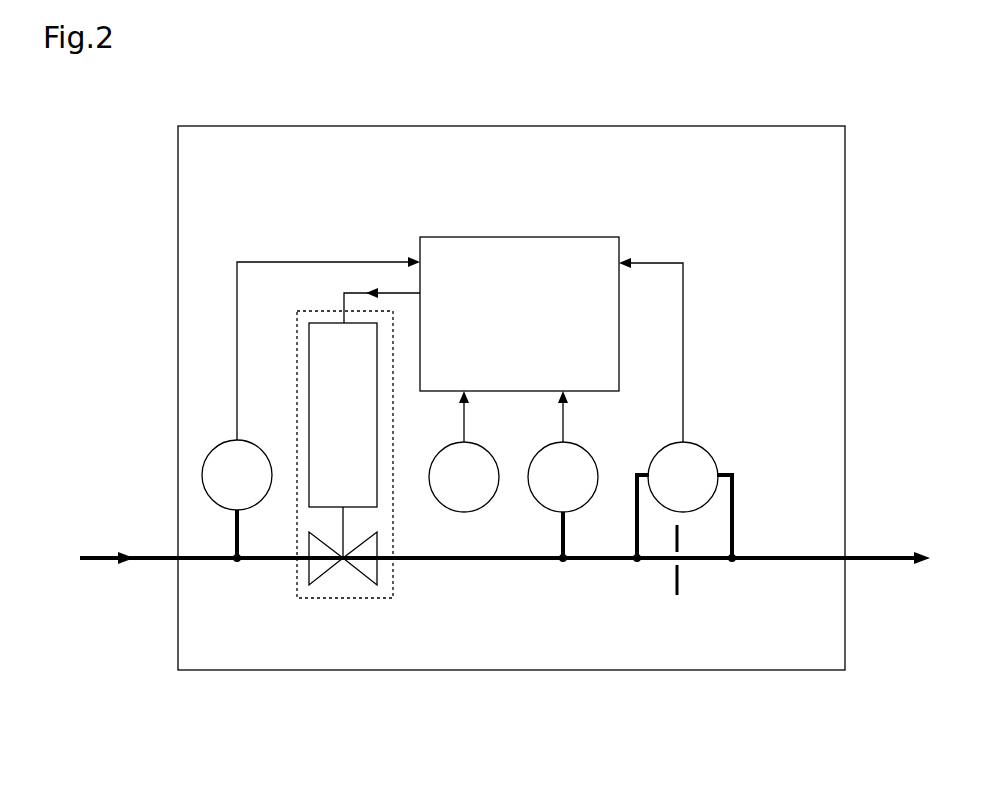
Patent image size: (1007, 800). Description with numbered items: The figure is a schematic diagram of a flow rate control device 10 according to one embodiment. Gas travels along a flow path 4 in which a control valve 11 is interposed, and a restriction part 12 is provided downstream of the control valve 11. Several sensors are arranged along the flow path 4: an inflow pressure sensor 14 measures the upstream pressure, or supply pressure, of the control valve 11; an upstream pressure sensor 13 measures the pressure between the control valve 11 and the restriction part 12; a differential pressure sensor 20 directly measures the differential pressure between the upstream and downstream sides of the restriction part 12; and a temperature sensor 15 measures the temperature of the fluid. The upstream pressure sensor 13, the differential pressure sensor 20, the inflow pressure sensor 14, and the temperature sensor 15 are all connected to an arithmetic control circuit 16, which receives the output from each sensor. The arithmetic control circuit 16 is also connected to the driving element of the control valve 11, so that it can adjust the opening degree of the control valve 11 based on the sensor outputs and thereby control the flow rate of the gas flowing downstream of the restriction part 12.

The flow rate control device 10 is at (690, 125).
The flow path 4 is at (153, 560).
The arithmetic control circuit 16 is at (510, 237).
The inflow pressure sensor 14 is at (205, 452).
The control valve 11 is at (301, 598).
The temperature sensor 15 is at (432, 500).
The upstream pressure sensor 13 is at (545, 500).
The differential pressure sensor 20 is at (710, 452).
The restriction part 12 is at (675, 582).